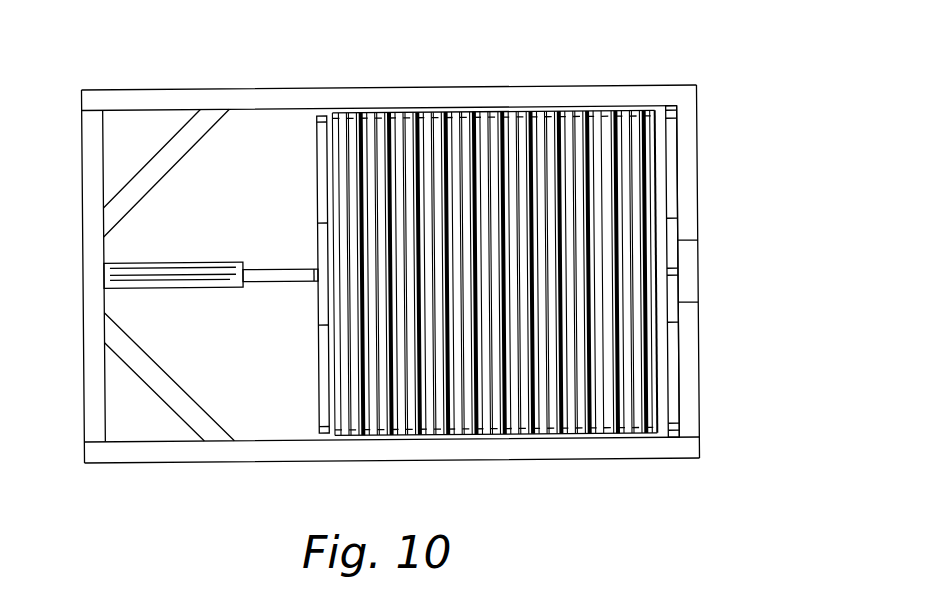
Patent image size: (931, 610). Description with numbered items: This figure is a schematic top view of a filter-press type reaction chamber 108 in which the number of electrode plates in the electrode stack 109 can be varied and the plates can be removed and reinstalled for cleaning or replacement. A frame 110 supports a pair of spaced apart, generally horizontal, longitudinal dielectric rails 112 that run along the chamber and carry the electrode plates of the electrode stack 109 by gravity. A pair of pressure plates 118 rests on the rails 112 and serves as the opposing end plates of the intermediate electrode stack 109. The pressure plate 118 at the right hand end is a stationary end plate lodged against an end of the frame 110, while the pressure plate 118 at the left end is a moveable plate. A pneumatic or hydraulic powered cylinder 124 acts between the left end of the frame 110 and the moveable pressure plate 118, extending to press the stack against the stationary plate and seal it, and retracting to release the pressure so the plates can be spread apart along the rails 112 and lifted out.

The reaction chamber 108 is at (399, 262).
The electrode stack 109 is at (565, 114).
The frame 110 is at (91, 246).
The dielectric rails 112 is at (444, 93).
The pressure plates 118 is at (324, 156).
The hydraulic cylinder 124 is at (151, 261).